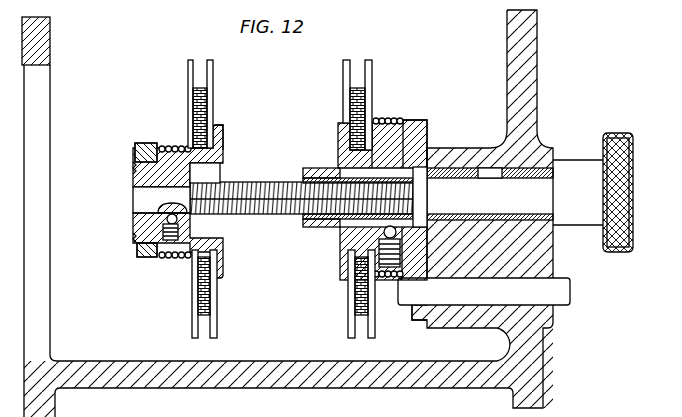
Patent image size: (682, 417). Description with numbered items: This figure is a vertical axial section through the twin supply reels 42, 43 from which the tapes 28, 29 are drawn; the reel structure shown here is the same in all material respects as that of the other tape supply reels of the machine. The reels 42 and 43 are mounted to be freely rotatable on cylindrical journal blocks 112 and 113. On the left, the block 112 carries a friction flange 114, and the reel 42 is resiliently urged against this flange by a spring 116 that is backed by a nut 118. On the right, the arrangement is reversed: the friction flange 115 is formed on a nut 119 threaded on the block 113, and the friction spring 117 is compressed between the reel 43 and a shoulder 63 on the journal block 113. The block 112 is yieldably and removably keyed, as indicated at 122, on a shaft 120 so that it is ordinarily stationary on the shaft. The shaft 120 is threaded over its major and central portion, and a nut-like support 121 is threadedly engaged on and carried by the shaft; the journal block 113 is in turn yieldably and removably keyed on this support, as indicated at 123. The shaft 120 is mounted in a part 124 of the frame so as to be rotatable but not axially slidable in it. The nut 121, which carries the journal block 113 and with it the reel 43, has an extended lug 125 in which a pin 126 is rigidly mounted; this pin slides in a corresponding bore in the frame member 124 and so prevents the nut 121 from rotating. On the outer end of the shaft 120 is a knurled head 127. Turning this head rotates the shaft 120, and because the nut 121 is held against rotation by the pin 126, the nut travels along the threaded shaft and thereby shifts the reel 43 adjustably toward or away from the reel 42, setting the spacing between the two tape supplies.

The tape 28 is at (217, 193).
The tape 29 is at (348, 100).
The supply reel 42 is at (191, 303).
The supply reel 43 is at (349, 302).
The shoulder 63 is at (411, 126).
The journal block 112 is at (138, 180).
The journal block 113 is at (426, 130).
The friction flange 114 is at (221, 150).
The friction flange 115 is at (339, 150).
The spring 116 is at (174, 146).
The friction spring 117 is at (377, 121).
The nut 118 is at (141, 145).
The nut 119 is at (315, 167).
The shaft 120 is at (137, 203).
The nut-like support 121 is at (396, 167).
The key 122 is at (177, 220).
The key 123 is at (384, 234).
The frame part 124 is at (465, 157).
The lug 125 is at (420, 320).
The pin 126 is at (564, 304).
The knurled head 127 is at (605, 134).